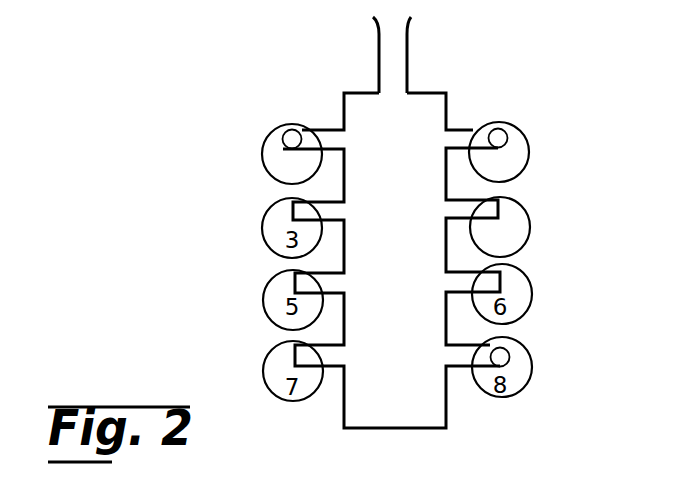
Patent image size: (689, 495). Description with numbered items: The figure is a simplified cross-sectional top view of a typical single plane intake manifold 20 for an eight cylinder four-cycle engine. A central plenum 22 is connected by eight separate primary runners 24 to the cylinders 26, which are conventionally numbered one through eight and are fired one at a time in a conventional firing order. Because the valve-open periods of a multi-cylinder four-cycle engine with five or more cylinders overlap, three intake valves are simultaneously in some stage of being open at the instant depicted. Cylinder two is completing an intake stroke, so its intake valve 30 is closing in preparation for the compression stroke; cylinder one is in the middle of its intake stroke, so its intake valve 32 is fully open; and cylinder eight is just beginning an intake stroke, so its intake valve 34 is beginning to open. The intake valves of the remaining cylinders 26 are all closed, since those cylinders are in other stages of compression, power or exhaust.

The single plane intake manifold 20 is at (391, 222).
The plenum 22 is at (408, 258).
The primary runners 24 is at (251, 151).
The cylinders 26 is at (538, 180).
The intake valve 30 is at (507, 137).
The intake valve 32 is at (283, 134).
The intake valve 34 is at (509, 355).